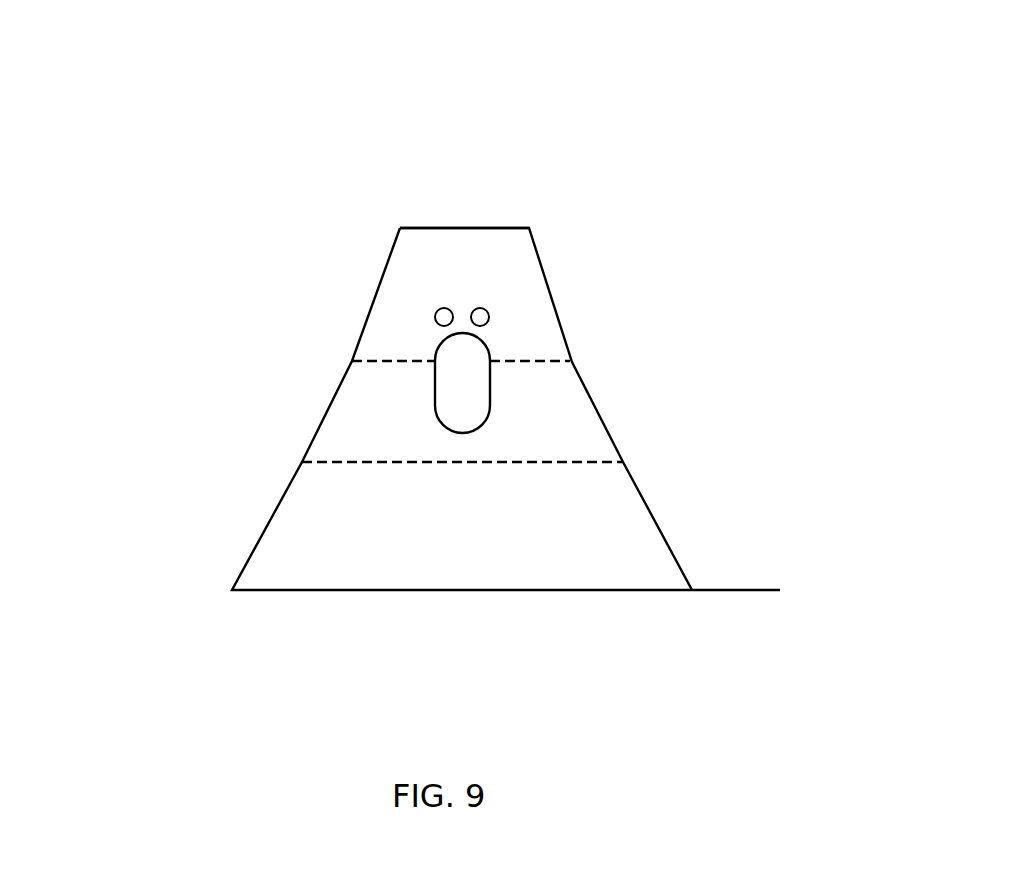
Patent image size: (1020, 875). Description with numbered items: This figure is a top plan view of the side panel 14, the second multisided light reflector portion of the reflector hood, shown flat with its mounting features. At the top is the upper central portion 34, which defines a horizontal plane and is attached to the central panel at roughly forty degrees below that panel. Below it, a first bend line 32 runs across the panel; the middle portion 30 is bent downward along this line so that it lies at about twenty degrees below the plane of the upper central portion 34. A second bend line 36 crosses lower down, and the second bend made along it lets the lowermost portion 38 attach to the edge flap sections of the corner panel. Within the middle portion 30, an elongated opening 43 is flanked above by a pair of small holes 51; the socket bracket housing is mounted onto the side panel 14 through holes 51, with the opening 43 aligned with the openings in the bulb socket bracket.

The side panel 14 is at (612, 191).
The upper central portion 34 is at (423, 247).
The holes 51 is at (487, 310).
The first bend line 32 is at (553, 362).
The middle portion 30 is at (360, 377).
The openings 43 is at (468, 398).
The second bend line 36 is at (347, 462).
The lowermost portion 38 is at (312, 527).